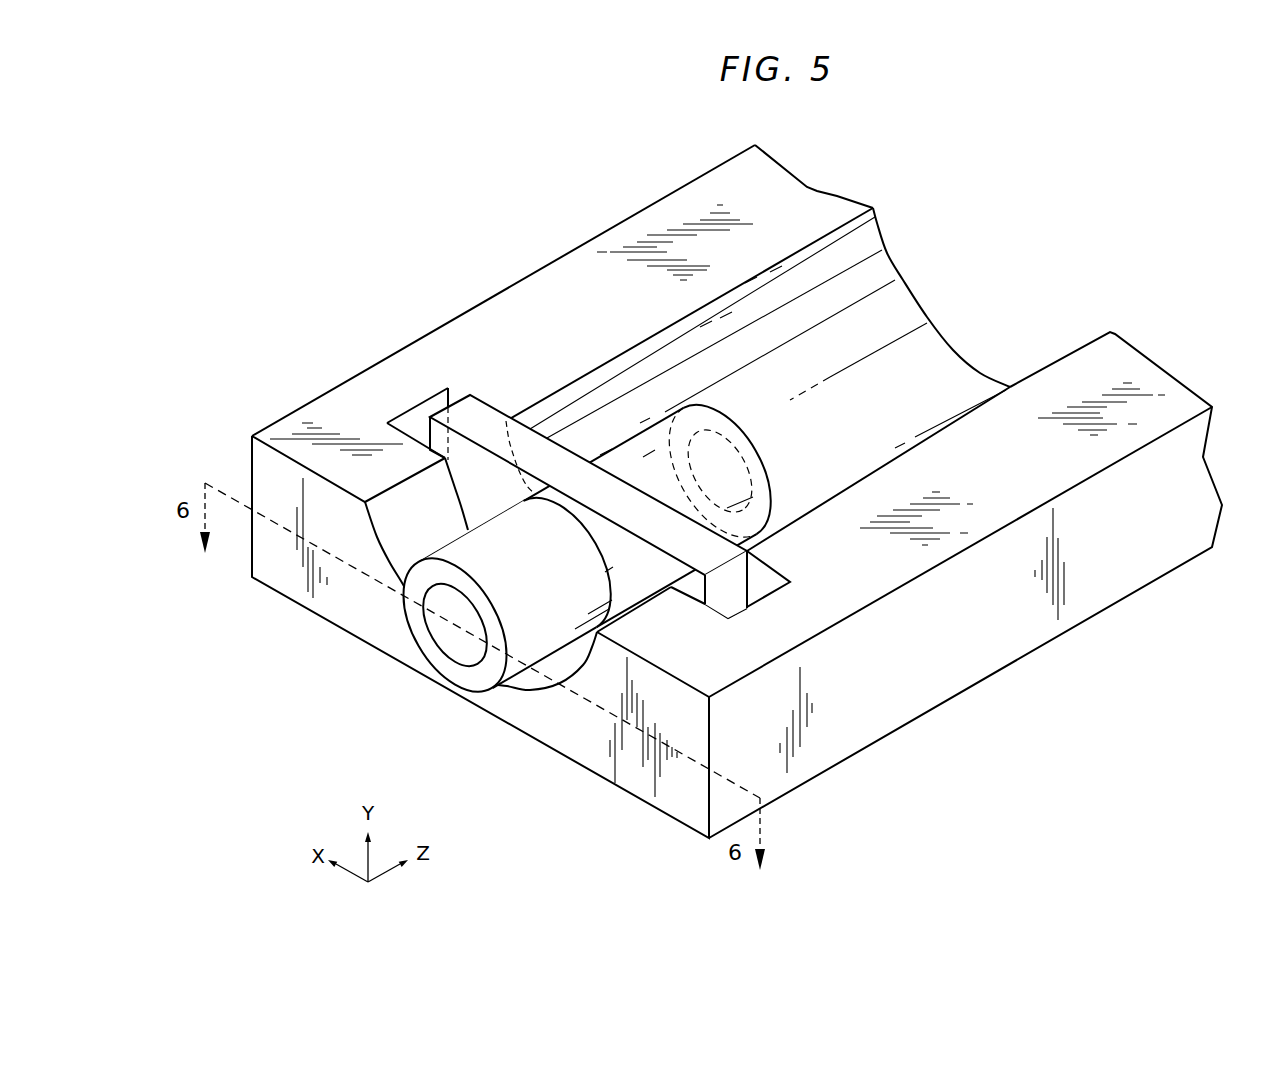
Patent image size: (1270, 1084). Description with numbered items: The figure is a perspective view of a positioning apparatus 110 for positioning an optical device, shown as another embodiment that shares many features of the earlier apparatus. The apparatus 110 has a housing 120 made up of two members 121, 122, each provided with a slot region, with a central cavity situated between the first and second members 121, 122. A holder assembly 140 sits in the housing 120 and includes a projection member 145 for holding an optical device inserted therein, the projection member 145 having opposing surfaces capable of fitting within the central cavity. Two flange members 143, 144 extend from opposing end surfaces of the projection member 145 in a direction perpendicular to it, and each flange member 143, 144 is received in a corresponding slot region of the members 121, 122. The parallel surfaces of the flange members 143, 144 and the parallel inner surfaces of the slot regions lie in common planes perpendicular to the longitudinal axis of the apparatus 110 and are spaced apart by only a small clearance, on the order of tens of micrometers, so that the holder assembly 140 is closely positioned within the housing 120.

The positioning apparatus 110 is at (440, 232).
The housing 120 is at (737, 530).
The first member 121 is at (842, 733).
The second member 122 is at (350, 410).
The holder assembly 140 is at (542, 680).
The flange member 143 is at (750, 548).
The flange member 144 is at (476, 425).
The projection member 145 is at (517, 520).